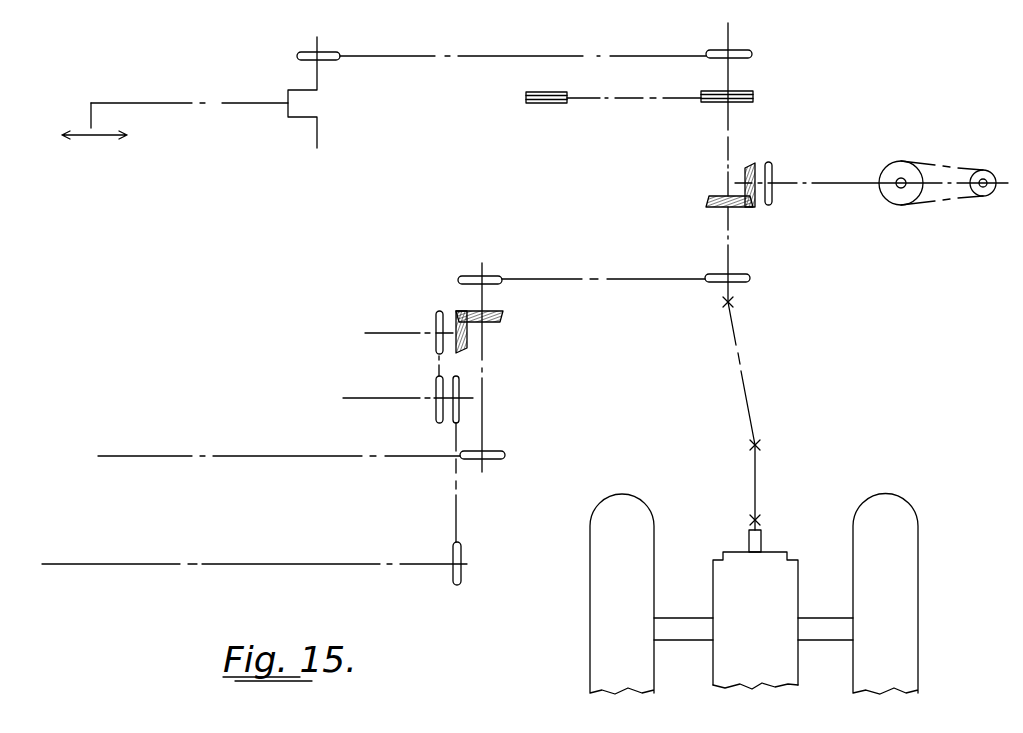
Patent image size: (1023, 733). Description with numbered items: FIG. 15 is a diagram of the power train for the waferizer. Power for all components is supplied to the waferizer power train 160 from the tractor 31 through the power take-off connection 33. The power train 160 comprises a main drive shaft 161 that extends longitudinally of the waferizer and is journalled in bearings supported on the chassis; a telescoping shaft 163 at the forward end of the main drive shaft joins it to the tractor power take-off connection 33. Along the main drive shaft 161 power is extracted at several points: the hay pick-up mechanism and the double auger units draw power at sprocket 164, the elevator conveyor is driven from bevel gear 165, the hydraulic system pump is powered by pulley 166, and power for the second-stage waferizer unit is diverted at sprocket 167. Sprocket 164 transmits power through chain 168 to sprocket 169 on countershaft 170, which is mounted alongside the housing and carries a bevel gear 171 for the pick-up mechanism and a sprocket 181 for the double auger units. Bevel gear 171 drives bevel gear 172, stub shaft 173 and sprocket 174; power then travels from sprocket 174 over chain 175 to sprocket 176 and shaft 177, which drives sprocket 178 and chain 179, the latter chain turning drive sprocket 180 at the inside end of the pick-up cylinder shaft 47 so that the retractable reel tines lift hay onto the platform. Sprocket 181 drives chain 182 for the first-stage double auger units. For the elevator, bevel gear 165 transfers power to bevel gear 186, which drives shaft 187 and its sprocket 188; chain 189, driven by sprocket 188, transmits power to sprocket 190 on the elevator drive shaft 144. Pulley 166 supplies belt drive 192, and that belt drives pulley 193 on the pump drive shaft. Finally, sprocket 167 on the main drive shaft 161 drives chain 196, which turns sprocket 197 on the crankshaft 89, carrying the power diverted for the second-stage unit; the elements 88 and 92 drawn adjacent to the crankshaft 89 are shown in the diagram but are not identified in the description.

The tractor 31 is at (782, 572).
The power take-off connection 33 is at (759, 540).
The pick-up cylinder shaft 47 is at (297, 548).
The link 88 is at (160, 103).
The crankshaft 89 is at (317, 82).
The pivot 92 is at (89, 114).
The elevator drive shaft 144 is at (978, 193).
The waferizer power train 160 is at (301, 202).
The main drive shaft 161 is at (732, 270).
The telescoping shaft 163 is at (752, 413).
The sprocket 164 is at (738, 281).
The bevel gear 165 is at (707, 200).
The pulley 166 is at (753, 97).
The sprocket 167 is at (740, 56).
The chain 168 is at (560, 281).
The sprocket 169 is at (487, 278).
The countershaft 170 is at (485, 297).
The bevel gear 171 is at (503, 316).
The bevel gear 172 is at (465, 345).
The stub shaft 173 is at (447, 333).
The sprocket 174 is at (436, 320).
The chain 175 is at (438, 366).
The sprocket 176 is at (436, 388).
The shaft 177 is at (453, 424).
The sprocket 178 is at (460, 390).
The chain 179 is at (457, 528).
The drive sprocket 180 is at (461, 552).
The sprocket 181 is at (505, 455).
The chain 182 is at (425, 457).
The bevel gear 186 is at (753, 198).
The shaft 187 is at (797, 183).
The sprocket 188 is at (771, 165).
The chain 189 is at (940, 200).
The sprocket 190 is at (1000, 161).
The belt drive 192 is at (620, 98).
The pulley 193 is at (525, 98).
The chain 196 is at (400, 56).
The sprocket 197 is at (320, 57).